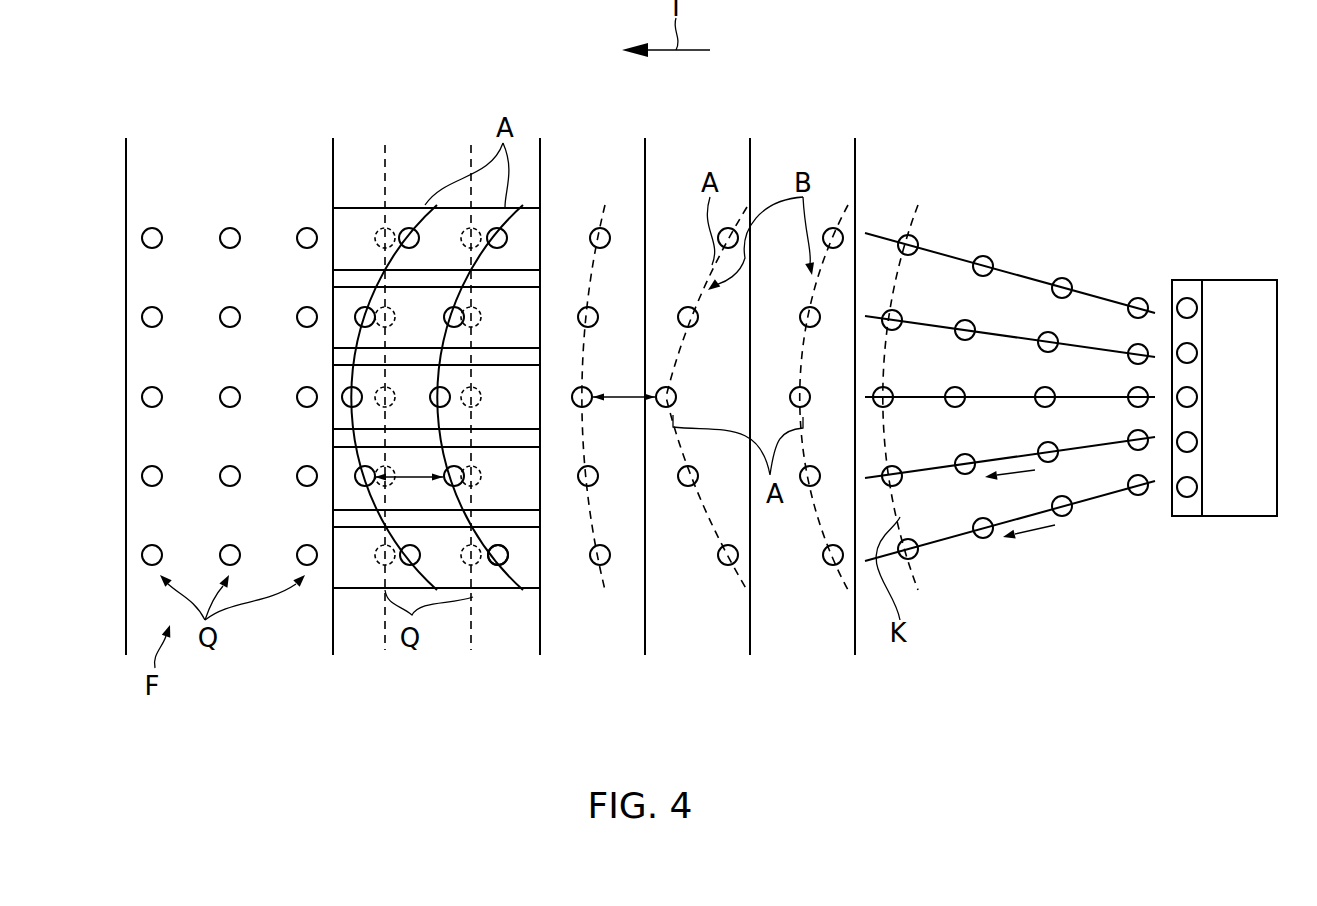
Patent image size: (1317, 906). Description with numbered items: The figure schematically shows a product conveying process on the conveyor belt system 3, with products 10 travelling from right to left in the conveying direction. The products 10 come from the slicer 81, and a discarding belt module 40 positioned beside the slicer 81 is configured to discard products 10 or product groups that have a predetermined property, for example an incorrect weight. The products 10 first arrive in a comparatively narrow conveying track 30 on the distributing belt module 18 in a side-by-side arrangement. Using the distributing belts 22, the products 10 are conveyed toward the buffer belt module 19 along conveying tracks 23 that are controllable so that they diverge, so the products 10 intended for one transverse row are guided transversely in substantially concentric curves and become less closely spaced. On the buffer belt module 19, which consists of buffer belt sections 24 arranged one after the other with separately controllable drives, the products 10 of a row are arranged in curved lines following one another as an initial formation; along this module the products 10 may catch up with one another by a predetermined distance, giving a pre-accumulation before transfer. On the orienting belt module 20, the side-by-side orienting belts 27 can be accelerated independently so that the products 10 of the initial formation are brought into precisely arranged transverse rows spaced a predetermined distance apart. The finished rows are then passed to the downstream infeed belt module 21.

The conveyor belt system 3 is at (981, 107).
The products 10 is at (497, 567).
The distributing belt module 18 is at (1012, 220).
The buffer belt module 19 is at (811, 120).
The orienting belt module 20 is at (437, 120).
The infeed belt module 21 is at (225, 120).
The distributing belts 22 is at (1107, 443).
The conveying tracks 23 is at (1025, 478).
The buffer belt sections 24 is at (710, 428).
The orienting belts 27 is at (436, 398).
The conveying track 30 is at (1137, 518).
The discarding belt module 40 is at (1187, 268).
The slicer 81 is at (1239, 398).